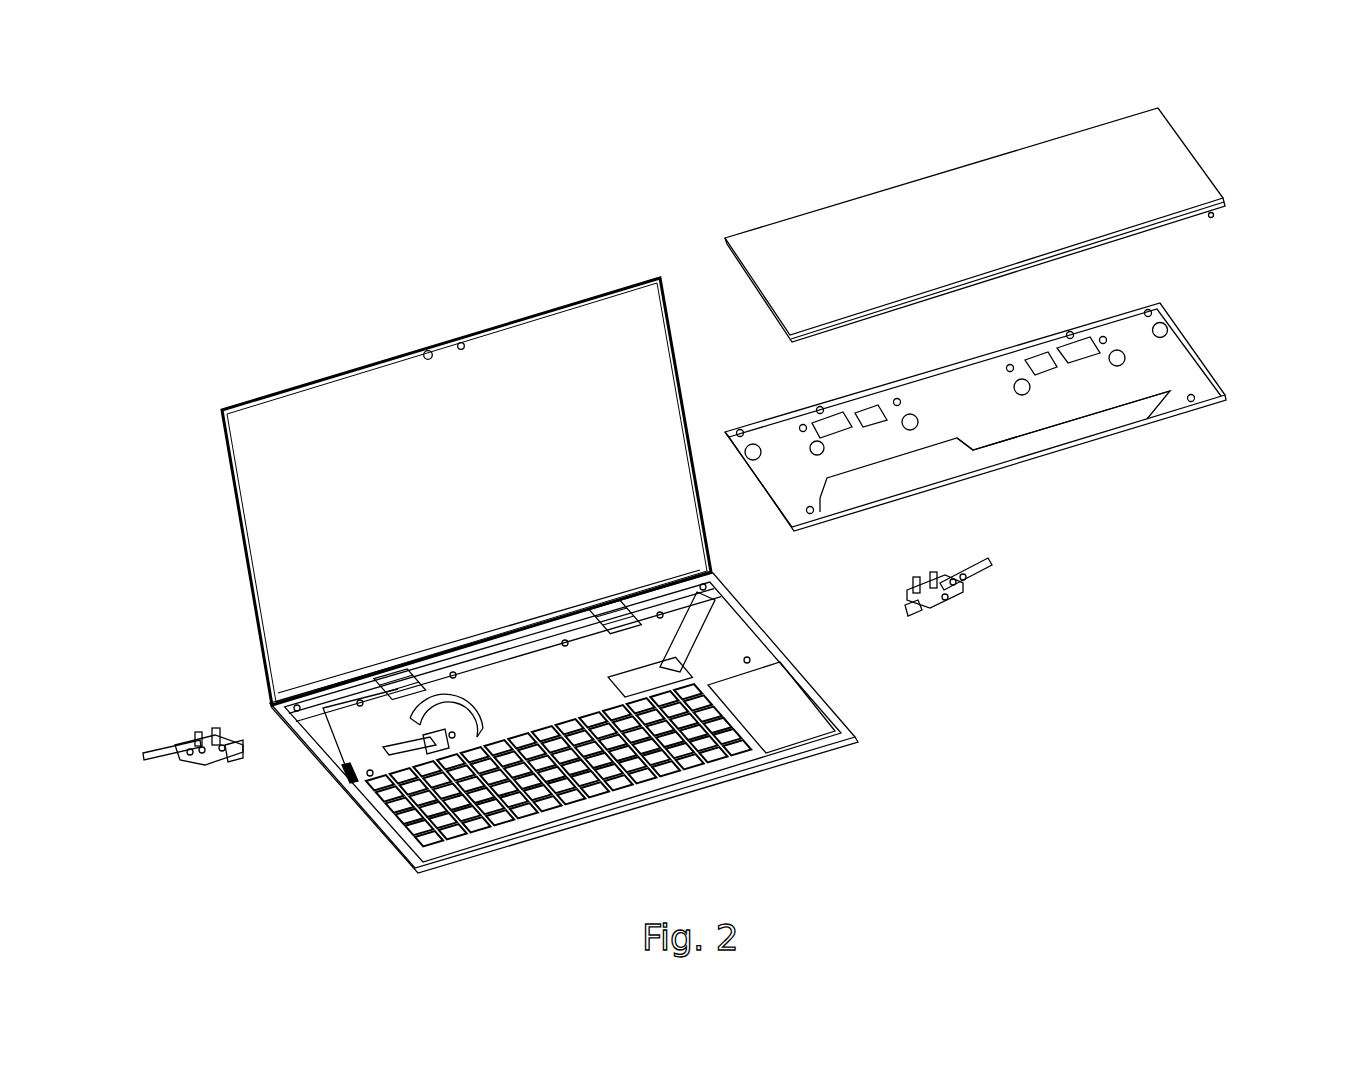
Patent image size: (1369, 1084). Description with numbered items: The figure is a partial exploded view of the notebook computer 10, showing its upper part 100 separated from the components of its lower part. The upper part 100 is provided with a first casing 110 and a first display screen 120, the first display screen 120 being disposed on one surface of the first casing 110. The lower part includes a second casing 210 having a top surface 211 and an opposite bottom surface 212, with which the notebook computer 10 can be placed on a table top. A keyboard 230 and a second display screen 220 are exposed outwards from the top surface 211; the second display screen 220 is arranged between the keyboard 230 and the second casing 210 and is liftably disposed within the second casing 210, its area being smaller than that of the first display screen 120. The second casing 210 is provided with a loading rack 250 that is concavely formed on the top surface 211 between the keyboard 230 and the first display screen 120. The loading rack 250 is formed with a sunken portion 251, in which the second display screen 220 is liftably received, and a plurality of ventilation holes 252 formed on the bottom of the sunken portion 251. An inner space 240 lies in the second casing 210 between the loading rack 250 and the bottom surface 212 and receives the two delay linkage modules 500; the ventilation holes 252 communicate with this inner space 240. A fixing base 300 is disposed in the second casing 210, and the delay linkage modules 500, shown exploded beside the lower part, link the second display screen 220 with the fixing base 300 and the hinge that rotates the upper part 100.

The notebook computer 10 is at (1347, 68).
The upper part 100 is at (382, 491).
The first casing 110 is at (233, 476).
The first display screen 120 is at (267, 538).
The second casing 210 is at (578, 721).
The top surface 211 is at (373, 800).
The bottom surface 212 is at (388, 840).
The second display screen 220 is at (1172, 165).
The keyboard 230 is at (733, 740).
The inner space 240 is at (348, 732).
The loading rack 250 is at (1002, 413).
The sunken portion 251 is at (1127, 398).
The ventilation holes 252 is at (1078, 360).
The fixing base 300 is at (168, 728).
The delay linkage modules 500 is at (977, 548).